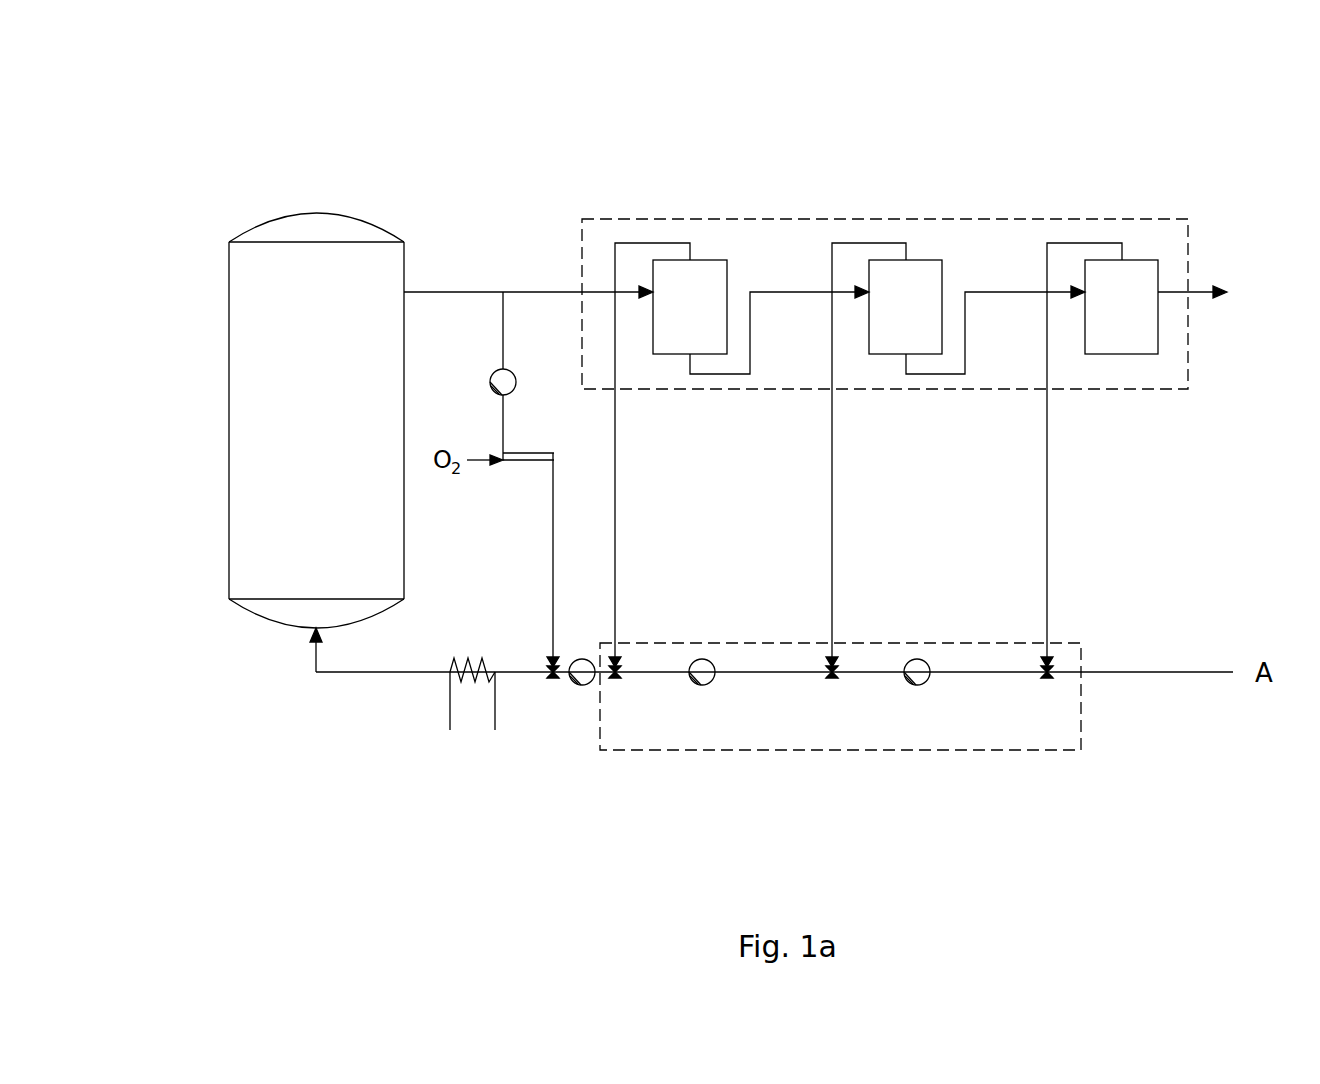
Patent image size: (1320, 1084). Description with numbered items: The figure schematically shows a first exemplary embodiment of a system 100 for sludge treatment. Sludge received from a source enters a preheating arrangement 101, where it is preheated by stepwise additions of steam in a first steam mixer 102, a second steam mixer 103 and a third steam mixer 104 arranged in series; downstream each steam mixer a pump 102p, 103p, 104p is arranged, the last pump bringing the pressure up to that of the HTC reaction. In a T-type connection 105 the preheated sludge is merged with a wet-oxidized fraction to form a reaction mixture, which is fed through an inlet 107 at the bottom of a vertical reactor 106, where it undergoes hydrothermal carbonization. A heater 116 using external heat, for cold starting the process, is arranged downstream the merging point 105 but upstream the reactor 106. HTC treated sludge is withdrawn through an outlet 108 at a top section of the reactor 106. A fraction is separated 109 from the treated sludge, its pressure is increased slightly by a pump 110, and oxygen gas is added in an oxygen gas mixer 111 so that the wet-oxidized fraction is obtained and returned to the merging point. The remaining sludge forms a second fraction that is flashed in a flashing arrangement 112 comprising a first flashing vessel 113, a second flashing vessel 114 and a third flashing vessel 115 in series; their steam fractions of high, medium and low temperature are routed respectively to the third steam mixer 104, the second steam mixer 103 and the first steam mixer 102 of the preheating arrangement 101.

The system 100 is at (230, 172).
The preheating arrangement 101 is at (1083, 727).
The first steam mixer 102 is at (1045, 681).
The pump 102p is at (922, 686).
The second steam mixer 103 is at (832, 681).
The pump 103p is at (708, 686).
The third steam mixer 104 is at (617, 681).
The pump 104p is at (586, 686).
The T-type connection 105 is at (553, 680).
The vertical reactor 106 is at (229, 492).
The inlet 107 is at (310, 632).
The outlet 108 is at (405, 290).
The fraction separation 109 is at (500, 290).
The pump 110 is at (510, 370).
The oxygen gas mixer 111 is at (522, 453).
The flashing arrangement 112 is at (1065, 220).
The first flashing vessel 113 is at (700, 260).
The second flashing vessel 114 is at (922, 260).
The third flashing vessel 115 is at (1145, 260).
The heater 116 is at (450, 722).